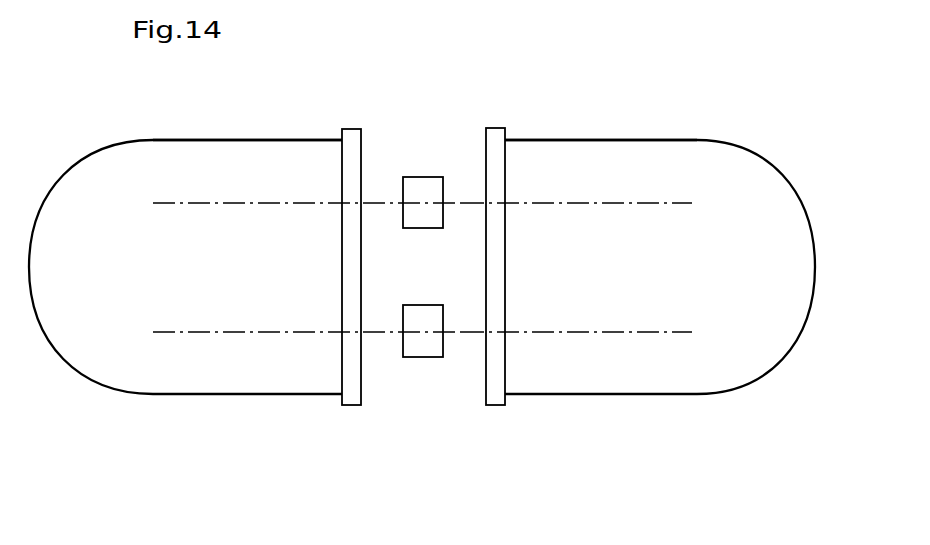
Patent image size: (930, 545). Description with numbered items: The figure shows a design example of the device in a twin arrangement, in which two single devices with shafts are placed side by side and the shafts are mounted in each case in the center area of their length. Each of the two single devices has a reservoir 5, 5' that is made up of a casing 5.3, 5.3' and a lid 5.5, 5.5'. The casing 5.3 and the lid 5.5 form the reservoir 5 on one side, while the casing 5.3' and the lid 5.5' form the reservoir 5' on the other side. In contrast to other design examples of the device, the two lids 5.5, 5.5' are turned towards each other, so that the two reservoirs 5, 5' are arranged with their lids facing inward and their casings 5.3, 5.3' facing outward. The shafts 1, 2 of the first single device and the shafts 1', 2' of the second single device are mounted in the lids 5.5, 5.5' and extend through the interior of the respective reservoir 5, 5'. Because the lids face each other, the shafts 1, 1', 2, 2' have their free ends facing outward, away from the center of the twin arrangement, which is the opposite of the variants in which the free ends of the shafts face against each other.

The shaft 1 is at (305, 230).
The shaft 1' is at (577, 230).
The shaft 2 is at (289, 310).
The shaft 2' is at (585, 308).
The reservoir 5 is at (185, 326).
The reservoir 5' is at (660, 330).
The casing 5.3 is at (232, 109).
The casing 5.3' is at (624, 110).
The lid 5.5 is at (340, 236).
The lid 5.5' is at (496, 236).